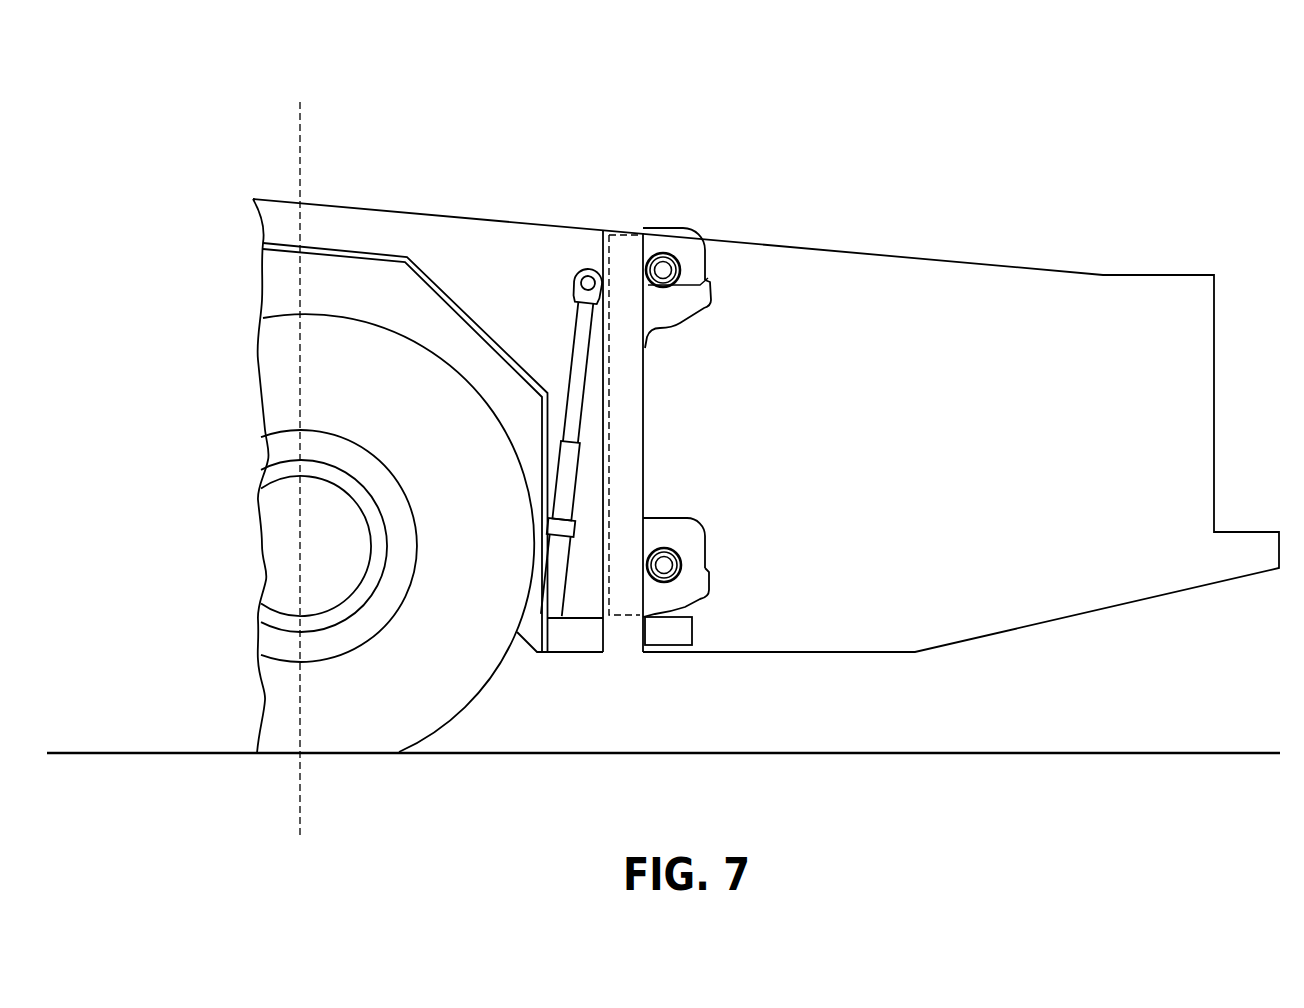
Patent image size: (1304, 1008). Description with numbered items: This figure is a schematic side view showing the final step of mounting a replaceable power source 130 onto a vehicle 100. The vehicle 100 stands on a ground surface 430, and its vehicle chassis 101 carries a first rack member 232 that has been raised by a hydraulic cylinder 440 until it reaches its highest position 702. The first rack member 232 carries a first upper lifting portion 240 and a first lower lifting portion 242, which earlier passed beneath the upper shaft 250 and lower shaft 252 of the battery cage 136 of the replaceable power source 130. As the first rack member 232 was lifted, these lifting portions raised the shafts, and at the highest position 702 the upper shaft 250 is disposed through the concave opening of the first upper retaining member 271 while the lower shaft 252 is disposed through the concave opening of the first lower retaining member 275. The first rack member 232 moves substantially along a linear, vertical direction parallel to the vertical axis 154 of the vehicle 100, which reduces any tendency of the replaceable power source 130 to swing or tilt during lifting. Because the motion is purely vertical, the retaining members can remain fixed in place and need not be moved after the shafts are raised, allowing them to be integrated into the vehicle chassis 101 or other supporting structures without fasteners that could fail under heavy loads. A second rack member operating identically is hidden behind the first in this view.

The vehicle 100 is at (612, 113).
The vehicle chassis 101 is at (526, 243).
The replaceable power source 130 is at (966, 207).
The battery cage 136 is at (940, 452).
The vertical axis 154 is at (305, 155).
The first rack member 232 is at (627, 598).
The first upper lifting portion 240 is at (700, 298).
The first lower lifting portion 242 is at (700, 585).
The upper shaft 250 is at (663, 262).
The lower shaft 252 is at (670, 566).
The first upper retaining member 271 is at (678, 242).
The first lower retaining member 275 is at (678, 532).
The hydraulic cylinder 440 is at (565, 478).
The ground surface 430 is at (517, 754).
The highest position 702 is at (692, 345).